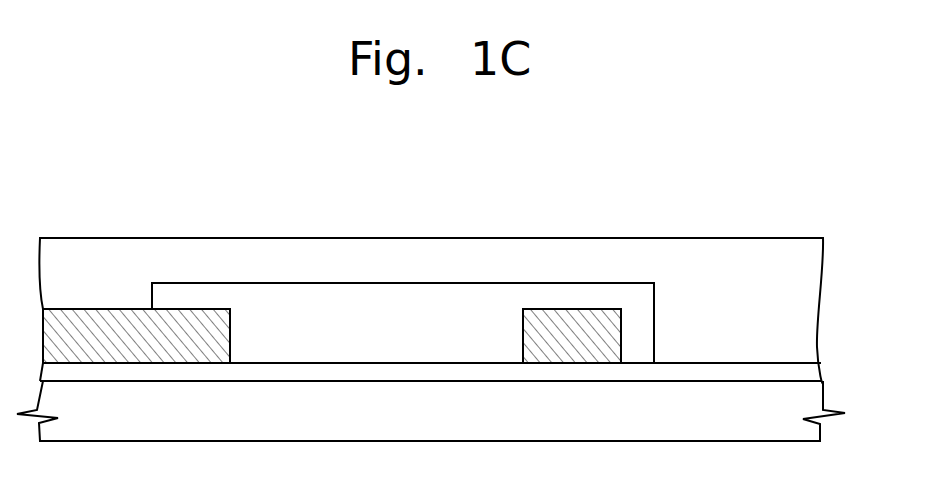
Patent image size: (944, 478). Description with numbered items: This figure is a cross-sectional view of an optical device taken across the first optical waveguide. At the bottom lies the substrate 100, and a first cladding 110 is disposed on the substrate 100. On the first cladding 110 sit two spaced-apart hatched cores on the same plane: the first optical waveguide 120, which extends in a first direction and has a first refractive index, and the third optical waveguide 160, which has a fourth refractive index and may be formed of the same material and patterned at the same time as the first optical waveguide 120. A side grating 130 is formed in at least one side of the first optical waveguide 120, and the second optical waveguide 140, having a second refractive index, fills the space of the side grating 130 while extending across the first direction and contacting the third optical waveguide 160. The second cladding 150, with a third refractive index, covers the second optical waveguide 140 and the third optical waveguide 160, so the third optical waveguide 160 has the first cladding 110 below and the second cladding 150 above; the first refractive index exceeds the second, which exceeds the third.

The substrate 100 is at (811, 399).
The first cladding 110 is at (811, 372).
The first optical waveguide 120 is at (600, 318).
The side grating 130 is at (545, 298).
The second optical waveguide 140 is at (190, 293).
The second cladding 150 is at (811, 298).
The third optical waveguide 160 is at (98, 317).